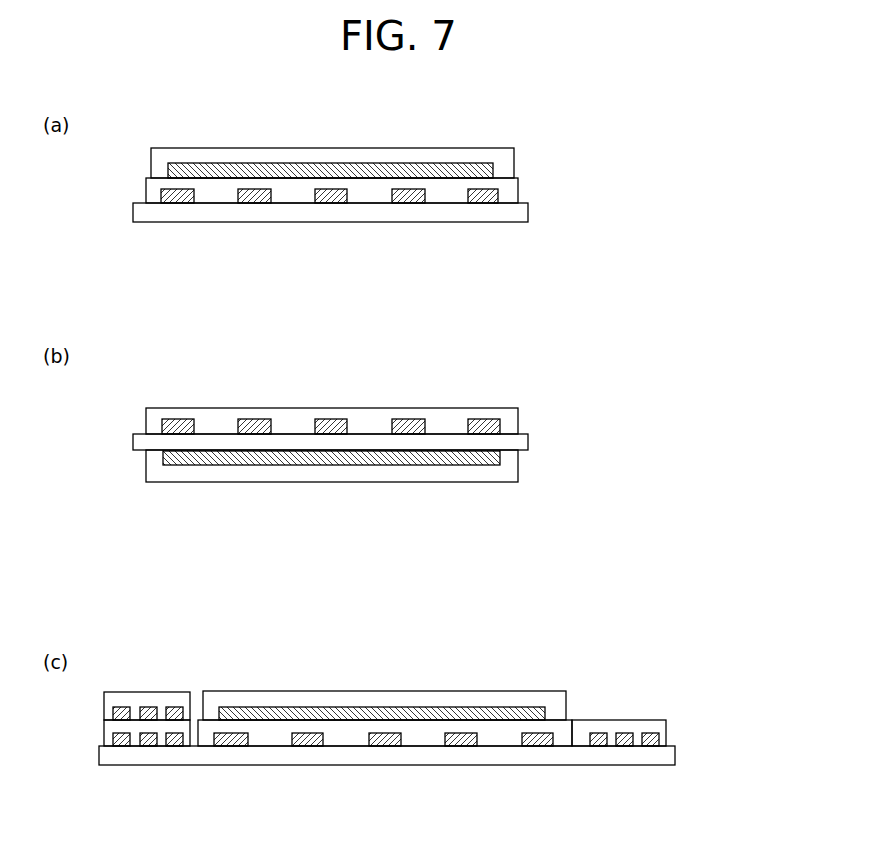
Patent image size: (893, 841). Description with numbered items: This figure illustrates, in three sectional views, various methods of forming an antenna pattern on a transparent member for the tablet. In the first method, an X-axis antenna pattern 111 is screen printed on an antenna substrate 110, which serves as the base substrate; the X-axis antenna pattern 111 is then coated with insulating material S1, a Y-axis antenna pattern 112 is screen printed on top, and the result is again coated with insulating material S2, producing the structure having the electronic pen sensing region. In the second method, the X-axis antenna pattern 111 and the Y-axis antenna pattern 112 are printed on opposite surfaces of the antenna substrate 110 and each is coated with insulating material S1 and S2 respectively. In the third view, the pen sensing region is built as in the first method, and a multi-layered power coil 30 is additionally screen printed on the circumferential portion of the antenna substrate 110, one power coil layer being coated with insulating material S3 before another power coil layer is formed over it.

The antenna substrate 110 is at (530, 210).
The X-axis antenna pattern 111 is at (498, 197).
The Y-axis antenna pattern 112 is at (483, 163).
The insulating material S1 is at (518, 177).
The insulating material S2 is at (515, 150).
The insulating material S3 is at (666, 722).
The multi-layered power coil 30 is at (658, 740).